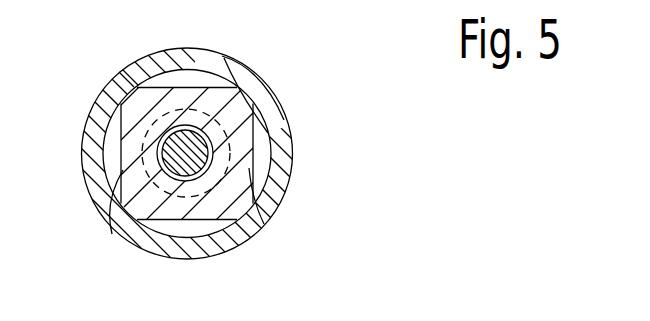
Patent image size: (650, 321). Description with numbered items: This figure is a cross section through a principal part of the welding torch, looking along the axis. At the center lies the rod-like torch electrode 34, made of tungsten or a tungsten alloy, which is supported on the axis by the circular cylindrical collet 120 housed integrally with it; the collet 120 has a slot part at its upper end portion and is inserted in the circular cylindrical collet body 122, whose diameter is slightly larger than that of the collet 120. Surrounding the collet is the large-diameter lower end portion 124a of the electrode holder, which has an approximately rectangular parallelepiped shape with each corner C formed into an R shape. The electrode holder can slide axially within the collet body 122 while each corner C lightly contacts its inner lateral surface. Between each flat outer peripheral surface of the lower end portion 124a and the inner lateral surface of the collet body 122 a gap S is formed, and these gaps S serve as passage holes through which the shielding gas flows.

The collet body 122 is at (84, 124).
The large-diameter lower end portion 124a is at (104, 197).
The torch electrode 34 is at (184, 156).
The collet 120 is at (224, 184).
The gap S is at (187, 79).
The corner C is at (119, 72).